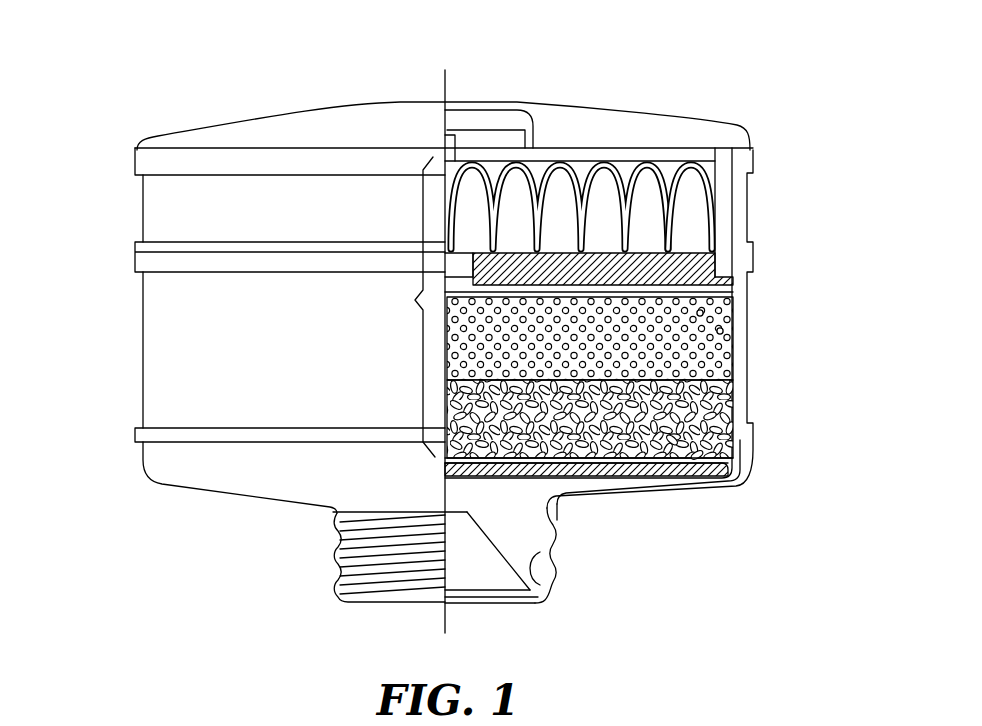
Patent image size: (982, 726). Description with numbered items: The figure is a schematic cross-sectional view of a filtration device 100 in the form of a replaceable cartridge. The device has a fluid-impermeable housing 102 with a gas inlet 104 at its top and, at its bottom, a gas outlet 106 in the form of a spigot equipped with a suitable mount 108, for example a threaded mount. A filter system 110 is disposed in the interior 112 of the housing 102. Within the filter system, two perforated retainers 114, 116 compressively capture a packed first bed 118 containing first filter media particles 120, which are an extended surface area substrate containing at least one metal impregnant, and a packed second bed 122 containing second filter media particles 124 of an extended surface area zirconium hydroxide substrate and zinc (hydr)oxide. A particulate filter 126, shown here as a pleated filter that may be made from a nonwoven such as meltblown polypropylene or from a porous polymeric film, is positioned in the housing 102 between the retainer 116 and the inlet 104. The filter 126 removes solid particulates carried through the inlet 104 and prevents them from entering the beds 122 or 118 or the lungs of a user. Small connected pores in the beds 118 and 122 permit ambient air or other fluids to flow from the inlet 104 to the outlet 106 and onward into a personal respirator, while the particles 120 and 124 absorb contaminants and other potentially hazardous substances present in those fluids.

The filtration device 100 is at (663, 78).
The housing 102 is at (118, 127).
The gas inlet 104 is at (486, 108).
The gas outlet 106 is at (555, 595).
The mount 108 is at (333, 567).
The filter system 110 is at (550, 313).
The interior 112 is at (670, 164).
The perforated retainer 114 is at (637, 463).
The perforated retainer 116 is at (690, 266).
The first bed 118 is at (727, 413).
The first filter media particles 120 is at (698, 458).
The second bed 122 is at (717, 357).
The second filter media particles 124 is at (720, 333).
The particulate filter 126 is at (700, 165).